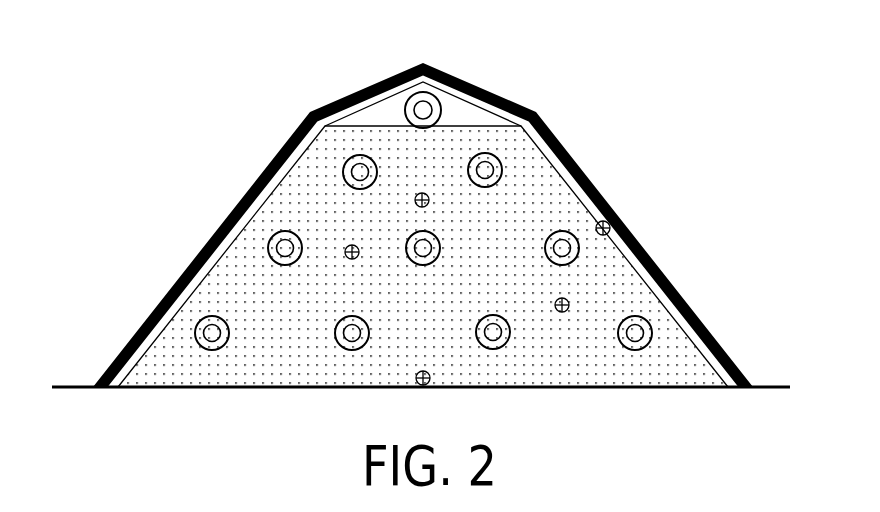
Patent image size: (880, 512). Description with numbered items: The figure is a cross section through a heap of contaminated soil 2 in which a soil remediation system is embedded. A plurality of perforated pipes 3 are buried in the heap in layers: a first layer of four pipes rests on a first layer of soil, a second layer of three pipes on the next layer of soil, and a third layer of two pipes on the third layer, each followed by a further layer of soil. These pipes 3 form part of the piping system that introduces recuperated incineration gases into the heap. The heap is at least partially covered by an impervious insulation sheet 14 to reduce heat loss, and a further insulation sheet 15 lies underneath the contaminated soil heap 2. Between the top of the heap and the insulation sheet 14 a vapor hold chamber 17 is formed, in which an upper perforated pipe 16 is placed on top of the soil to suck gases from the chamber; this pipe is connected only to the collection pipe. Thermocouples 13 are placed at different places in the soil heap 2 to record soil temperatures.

The contaminated soil heap 2 is at (632, 282).
The perforated pipes 3 is at (268, 247).
The thermocouples 13 is at (421, 193).
The insulation sheet 14 is at (570, 155).
The insulation sheet 15 is at (773, 385).
The upper perforated pipe 16 is at (427, 101).
The vapor hold chamber 17 is at (482, 120).